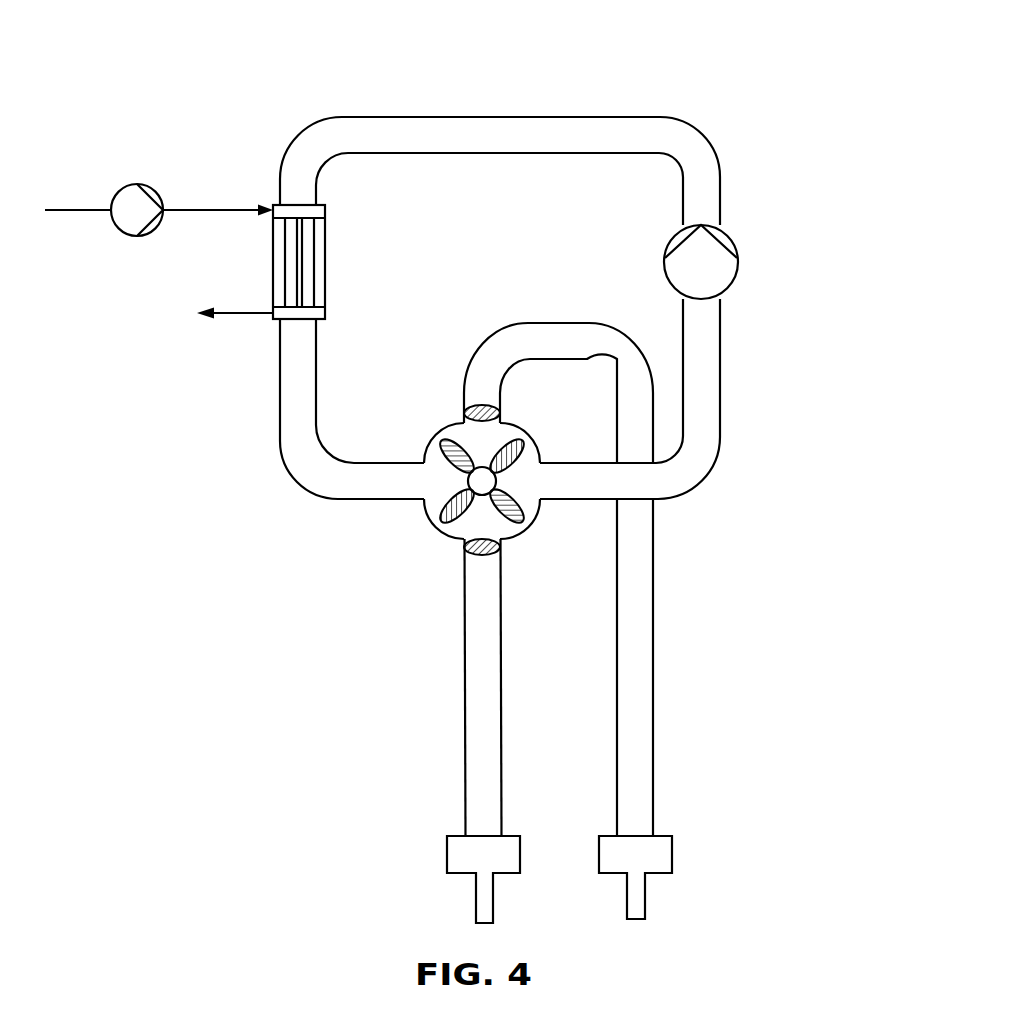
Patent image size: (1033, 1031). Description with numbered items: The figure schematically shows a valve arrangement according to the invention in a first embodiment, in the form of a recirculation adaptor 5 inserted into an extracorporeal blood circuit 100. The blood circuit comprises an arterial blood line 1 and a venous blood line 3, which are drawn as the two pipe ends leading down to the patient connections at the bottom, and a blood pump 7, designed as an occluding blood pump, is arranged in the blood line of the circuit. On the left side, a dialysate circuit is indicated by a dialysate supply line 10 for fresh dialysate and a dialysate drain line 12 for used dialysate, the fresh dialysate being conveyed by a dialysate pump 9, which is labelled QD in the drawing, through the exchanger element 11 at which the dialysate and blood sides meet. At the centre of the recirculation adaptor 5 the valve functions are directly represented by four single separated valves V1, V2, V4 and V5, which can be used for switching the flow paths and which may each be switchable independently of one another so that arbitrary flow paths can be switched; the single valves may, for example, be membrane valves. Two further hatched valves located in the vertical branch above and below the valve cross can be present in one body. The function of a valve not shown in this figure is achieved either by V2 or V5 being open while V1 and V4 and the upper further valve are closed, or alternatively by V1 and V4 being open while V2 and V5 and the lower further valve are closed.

The extracorporeal blood circuit 100 is at (731, 106).
The arterial blood line 1 is at (482, 792).
The venous blood line 3 is at (638, 792).
The recirculation adaptor 5 is at (452, 482).
The blood pump 7 is at (722, 270).
The dialysate pump 9 is at (104, 246).
The flow rate source QD is at (137, 193).
The dialysate supply line 10 is at (218, 212).
The heat exchanger 11 is at (277, 260).
The dialysate drain line 12 is at (258, 315).
The valve V1 is at (521, 520).
The valve V2 is at (442, 442).
The valve V4 is at (442, 521).
The valve V5 is at (519, 443).